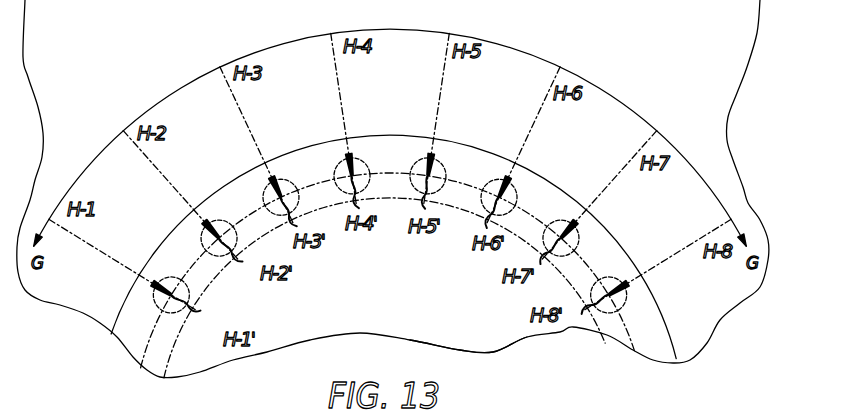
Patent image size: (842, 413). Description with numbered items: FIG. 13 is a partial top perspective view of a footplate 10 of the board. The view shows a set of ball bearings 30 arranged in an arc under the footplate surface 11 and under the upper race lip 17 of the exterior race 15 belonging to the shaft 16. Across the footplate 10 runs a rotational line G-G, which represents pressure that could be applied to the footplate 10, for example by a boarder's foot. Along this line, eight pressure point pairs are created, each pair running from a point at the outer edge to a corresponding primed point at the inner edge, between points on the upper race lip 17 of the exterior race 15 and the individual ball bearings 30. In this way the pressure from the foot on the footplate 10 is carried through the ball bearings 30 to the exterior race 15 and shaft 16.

The footplate 10 is at (615, 232).
The footplate surface 11 is at (398, 291).
The exterior race 15 is at (147, 343).
The shaft 16 is at (472, 307).
The upper race lip 17 is at (160, 316).
The ball bearings 30 is at (260, 197).